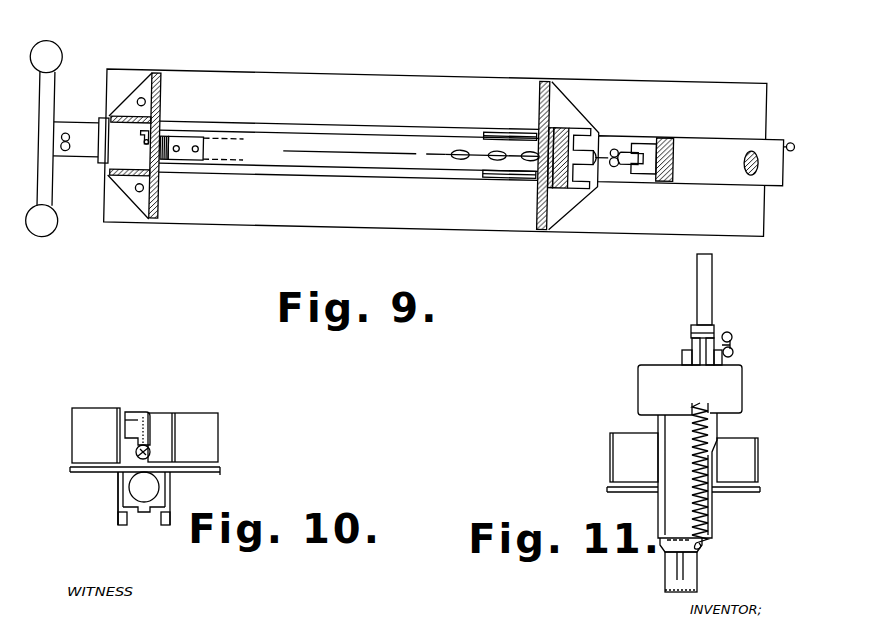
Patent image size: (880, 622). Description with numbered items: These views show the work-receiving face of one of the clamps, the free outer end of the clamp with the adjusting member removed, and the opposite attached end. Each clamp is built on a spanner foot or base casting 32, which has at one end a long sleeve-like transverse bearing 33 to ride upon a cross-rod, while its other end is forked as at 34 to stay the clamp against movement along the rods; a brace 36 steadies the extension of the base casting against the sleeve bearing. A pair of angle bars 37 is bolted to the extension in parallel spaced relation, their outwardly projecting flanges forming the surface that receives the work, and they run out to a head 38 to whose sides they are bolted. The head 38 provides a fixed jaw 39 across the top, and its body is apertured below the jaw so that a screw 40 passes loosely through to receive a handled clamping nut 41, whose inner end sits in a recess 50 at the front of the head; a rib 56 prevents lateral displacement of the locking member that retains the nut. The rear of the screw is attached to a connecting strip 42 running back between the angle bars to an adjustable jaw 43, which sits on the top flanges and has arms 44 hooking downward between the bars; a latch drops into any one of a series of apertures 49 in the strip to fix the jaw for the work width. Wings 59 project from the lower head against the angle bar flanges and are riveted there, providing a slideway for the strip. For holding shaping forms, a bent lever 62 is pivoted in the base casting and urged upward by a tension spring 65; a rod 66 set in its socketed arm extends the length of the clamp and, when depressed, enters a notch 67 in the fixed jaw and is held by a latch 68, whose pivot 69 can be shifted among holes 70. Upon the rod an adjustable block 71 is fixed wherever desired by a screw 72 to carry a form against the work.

In FIG. 9, the spanner foot or base casting 32 is at (716, 145).
In FIG. 11, the spanner foot or base casting 32 is at (663, 427).
In FIG. 11, the transverse bearing 33 is at (665, 378).
In FIG. 11, the forked end 34 is at (700, 577).
In FIG. 9, the brace 36 is at (745, 168).
In FIG. 9, the angle bars 37 is at (342, 83).
In FIG. 10, the angle bars 37 is at (100, 475).
In FIG. 11, the angle bars 37 is at (607, 491).
In FIG. 9, the head 38 is at (160, 112).
In FIG. 10, the head 38 is at (124, 498).
In FIG. 9, the fixed jaw 39 is at (153, 193).
In FIG. 10, the fixed jaw 39 is at (192, 420).
In FIG. 9, the screw 40 is at (167, 163).
In FIG. 9, the handled clamping nut 41 is at (75, 123).
In FIG. 9, the connecting strip 42 is at (378, 143).
In FIG. 9, the adjustable jaw 43 is at (540, 95).
In FIG. 9, the arms 44 is at (500, 131).
In FIG. 9, the apertures 49 is at (459, 163).
In FIG. 10, the recess 50 is at (142, 497).
In FIG. 10, the rib 56 is at (147, 513).
In FIG. 10, the wings 59 is at (168, 516).
In FIG. 11, the bent lever 62 is at (710, 435).
In FIG. 11, the tension spring 65 is at (705, 510).
In FIG. 11, the rod 66 is at (706, 280).
In FIG. 10, the notch or recess 67 is at (125, 431).
In FIG. 9, the latch 68 is at (141, 131).
In FIG. 10, the latch 68 is at (139, 416).
In FIG. 9, the pivot 69 is at (145, 142).
In FIG. 10, the pivot 69 is at (150, 452).
In FIG. 10, the holes 70 is at (153, 418).
In FIG. 11, the adjustable block 71 is at (706, 331).
In FIG. 11, the screw 72 is at (735, 341).